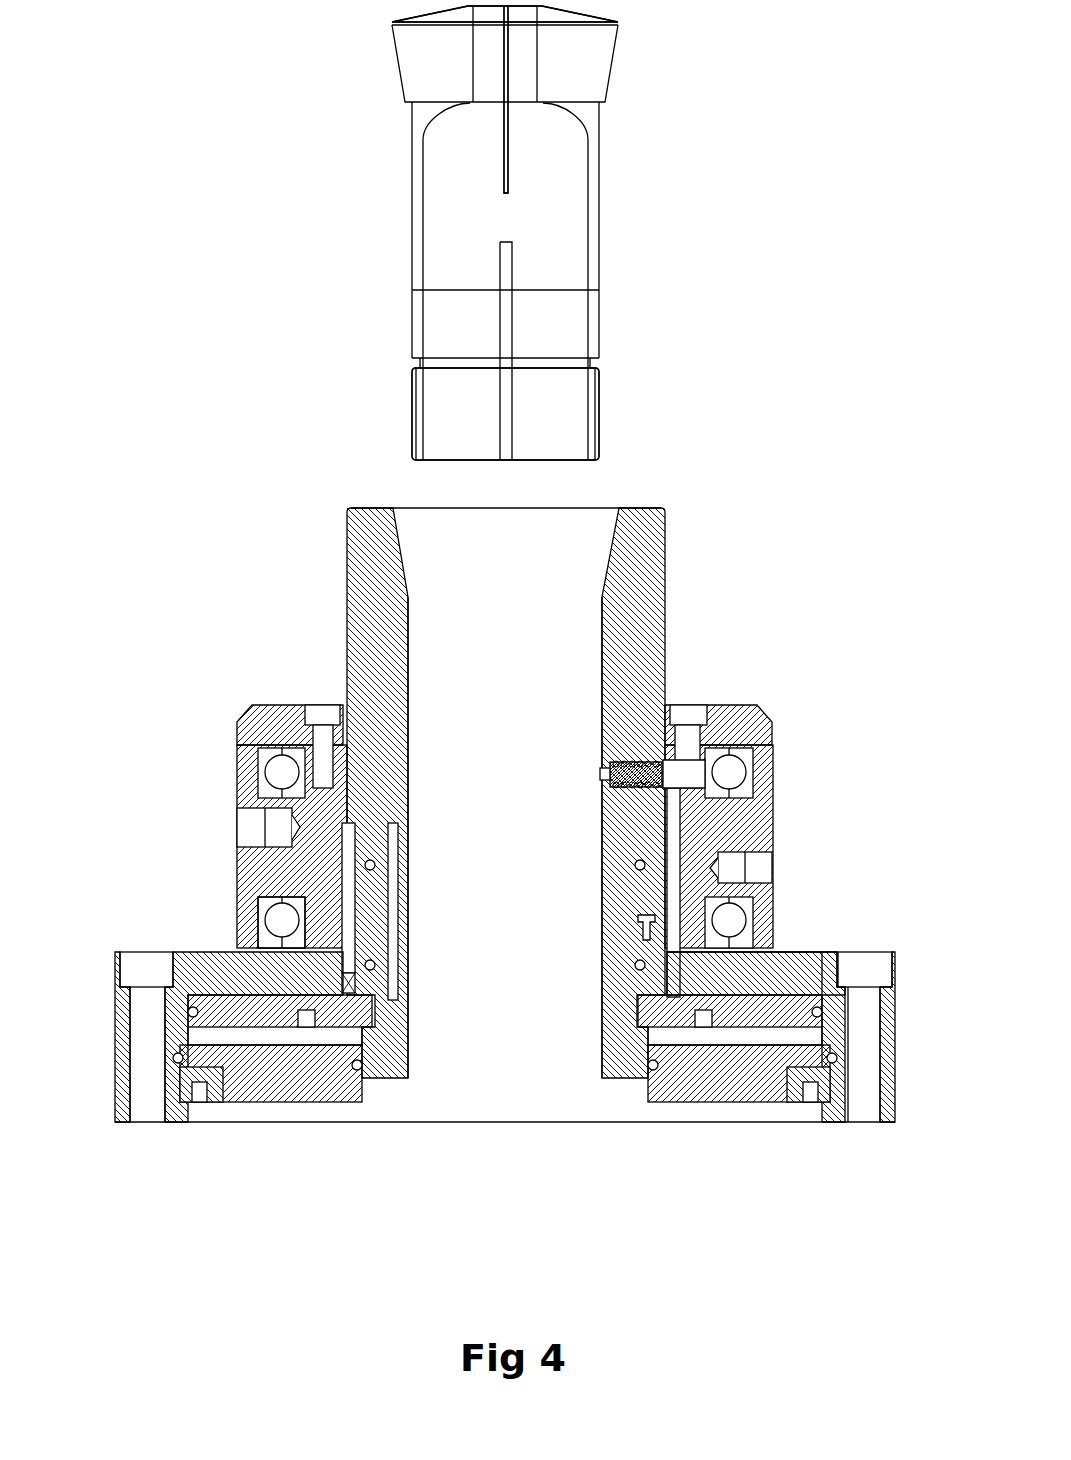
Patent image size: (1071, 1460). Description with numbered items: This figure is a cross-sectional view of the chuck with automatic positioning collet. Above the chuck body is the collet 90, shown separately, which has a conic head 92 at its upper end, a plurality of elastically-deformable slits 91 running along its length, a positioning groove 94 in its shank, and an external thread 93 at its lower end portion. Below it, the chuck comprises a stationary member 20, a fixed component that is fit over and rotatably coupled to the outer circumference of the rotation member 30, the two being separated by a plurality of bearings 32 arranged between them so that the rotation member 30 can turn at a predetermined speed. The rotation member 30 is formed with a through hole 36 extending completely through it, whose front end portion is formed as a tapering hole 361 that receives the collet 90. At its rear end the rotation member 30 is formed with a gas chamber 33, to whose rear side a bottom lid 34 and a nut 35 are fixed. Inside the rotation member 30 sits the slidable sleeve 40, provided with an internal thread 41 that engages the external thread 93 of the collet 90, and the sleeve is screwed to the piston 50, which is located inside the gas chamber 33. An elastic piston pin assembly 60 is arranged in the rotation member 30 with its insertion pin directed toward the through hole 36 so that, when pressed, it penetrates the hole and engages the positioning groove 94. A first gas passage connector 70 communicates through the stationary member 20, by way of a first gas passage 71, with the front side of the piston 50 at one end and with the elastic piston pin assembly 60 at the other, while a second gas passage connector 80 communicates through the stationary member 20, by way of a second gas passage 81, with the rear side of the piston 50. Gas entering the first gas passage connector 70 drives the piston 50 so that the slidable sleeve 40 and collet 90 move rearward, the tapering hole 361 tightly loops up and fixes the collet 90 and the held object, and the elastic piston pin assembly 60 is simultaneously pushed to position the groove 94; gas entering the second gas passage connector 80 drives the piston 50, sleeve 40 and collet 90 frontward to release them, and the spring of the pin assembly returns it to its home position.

The stationary member 20 is at (262, 878).
The rotation member 30 is at (357, 790).
The bearings 32 is at (297, 752).
The gas chamber 33 is at (205, 1037).
The bottom lid 34 is at (692, 1092).
The nut 35 is at (795, 1092).
The through hole 36 is at (467, 700).
The tapering hole 361 is at (492, 545).
The slidable sleeve 40 is at (407, 1062).
The internal thread 41 is at (415, 905).
The piston 50 is at (790, 990).
The elastic piston pin assembly 60 is at (655, 758).
The first gas passage connector 70 is at (755, 868).
The first gas passage 71 is at (773, 802).
The second gas passage connector 80 is at (253, 823).
The second gas passage 81 is at (262, 925).
The collet 90 is at (395, 48).
The elastically-deformable slits 91 is at (506, 80).
The conic head 92 is at (400, 33).
The external thread 93 is at (600, 418).
The positioning groove 94 is at (506, 252).